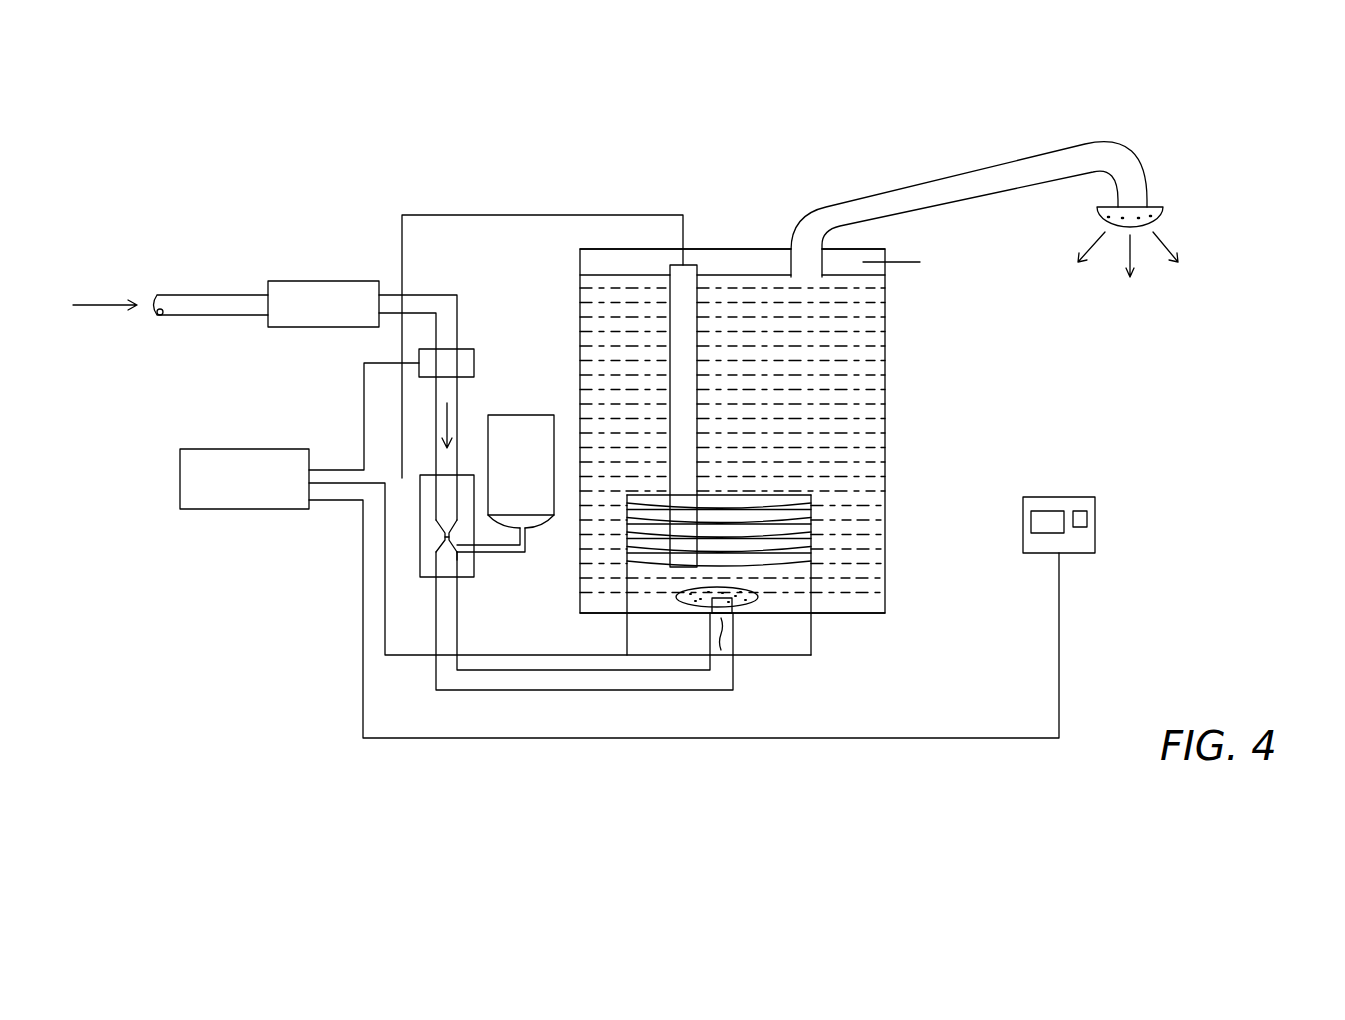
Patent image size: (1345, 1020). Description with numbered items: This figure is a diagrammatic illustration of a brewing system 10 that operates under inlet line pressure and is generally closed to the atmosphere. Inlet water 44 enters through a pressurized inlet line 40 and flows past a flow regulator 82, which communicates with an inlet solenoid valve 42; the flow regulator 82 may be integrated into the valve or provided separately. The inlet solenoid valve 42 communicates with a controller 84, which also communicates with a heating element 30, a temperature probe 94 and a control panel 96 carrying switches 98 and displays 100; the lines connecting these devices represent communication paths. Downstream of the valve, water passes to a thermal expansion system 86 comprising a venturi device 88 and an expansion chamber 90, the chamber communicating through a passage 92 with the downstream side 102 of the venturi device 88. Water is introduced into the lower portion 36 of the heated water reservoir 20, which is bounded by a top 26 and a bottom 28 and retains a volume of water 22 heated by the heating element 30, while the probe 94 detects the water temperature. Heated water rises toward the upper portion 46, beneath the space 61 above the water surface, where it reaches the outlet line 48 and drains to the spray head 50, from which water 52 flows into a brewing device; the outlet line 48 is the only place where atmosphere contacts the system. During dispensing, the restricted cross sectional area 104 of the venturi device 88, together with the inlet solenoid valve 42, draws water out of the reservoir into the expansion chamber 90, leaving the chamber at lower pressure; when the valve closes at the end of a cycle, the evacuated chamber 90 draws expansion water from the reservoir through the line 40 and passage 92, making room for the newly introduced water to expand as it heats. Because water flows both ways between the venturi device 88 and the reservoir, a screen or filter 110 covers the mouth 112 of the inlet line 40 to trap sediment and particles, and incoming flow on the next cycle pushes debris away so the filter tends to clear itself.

The brewing system 10 is at (378, 142).
The heated water reservoir 20 is at (898, 376).
The water 22 is at (867, 437).
The top 26 is at (748, 247).
The bottom 28 is at (863, 615).
The heating element 30 is at (811, 508).
The lower portion 36 is at (867, 548).
The inlet line 40 is at (226, 297).
The inlet solenoid valve 42 is at (475, 362).
The inlet water 44 is at (100, 302).
The upper portion 46 is at (867, 306).
The outlet line 48 is at (888, 183).
The spray head 50 is at (1165, 210).
The water 52 is at (1183, 250).
The space 61 is at (909, 279).
The flow regulator 82 is at (332, 281).
The controller 84 is at (240, 449).
The thermal expansion system 86 is at (403, 538).
The venturi device 88 is at (418, 557).
The expansion chamber 90 is at (522, 428).
The passage 92 is at (512, 553).
The temperature probe 94 is at (670, 337).
The control panel 96 is at (1075, 486).
The switches 98 is at (1090, 519).
The displays 100 is at (1048, 507).
The downstream side 102 is at (458, 553).
The restricted cross sectional area 104 is at (442, 532).
The screen or filter 110 is at (735, 608).
The mouth 112 is at (680, 598).